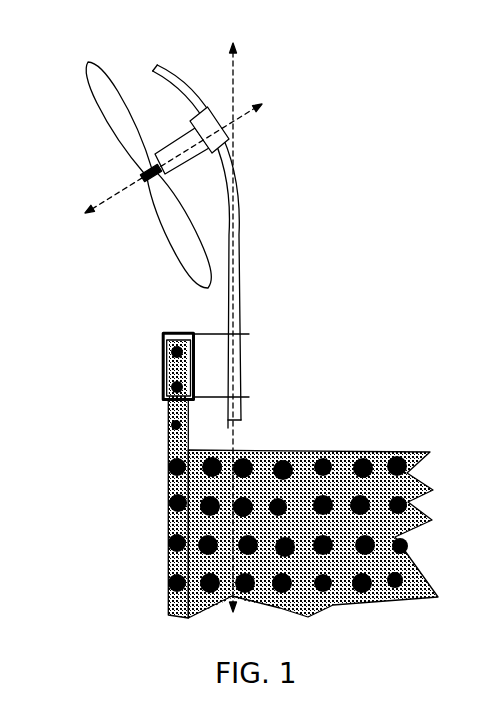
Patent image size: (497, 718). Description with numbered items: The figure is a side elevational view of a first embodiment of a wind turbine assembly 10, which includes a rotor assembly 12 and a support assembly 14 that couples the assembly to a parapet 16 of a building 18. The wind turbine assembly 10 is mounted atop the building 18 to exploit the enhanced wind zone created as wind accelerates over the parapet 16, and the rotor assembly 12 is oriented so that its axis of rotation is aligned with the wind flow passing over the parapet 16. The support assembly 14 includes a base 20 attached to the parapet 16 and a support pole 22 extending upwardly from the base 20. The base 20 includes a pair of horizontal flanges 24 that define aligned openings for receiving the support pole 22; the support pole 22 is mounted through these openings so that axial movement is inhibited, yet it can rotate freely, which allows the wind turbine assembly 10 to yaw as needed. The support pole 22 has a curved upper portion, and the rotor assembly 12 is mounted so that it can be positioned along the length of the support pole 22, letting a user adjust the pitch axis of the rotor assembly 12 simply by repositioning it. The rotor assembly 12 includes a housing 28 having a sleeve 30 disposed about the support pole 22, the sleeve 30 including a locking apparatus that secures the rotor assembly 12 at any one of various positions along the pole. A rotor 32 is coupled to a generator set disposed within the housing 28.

The wind turbine assembly 10 is at (239, 333).
The rotor assembly 12 is at (205, 167).
The support assembly 14 is at (279, 337).
The parapet 16 is at (172, 430).
The building 18 is at (141, 545).
The base 20 is at (163, 370).
The support pole 22 is at (235, 267).
The horizontal flanges 24 is at (213, 338).
The housing 28 is at (181, 137).
The sleeve 30 is at (213, 118).
The rotor 32 is at (117, 124).